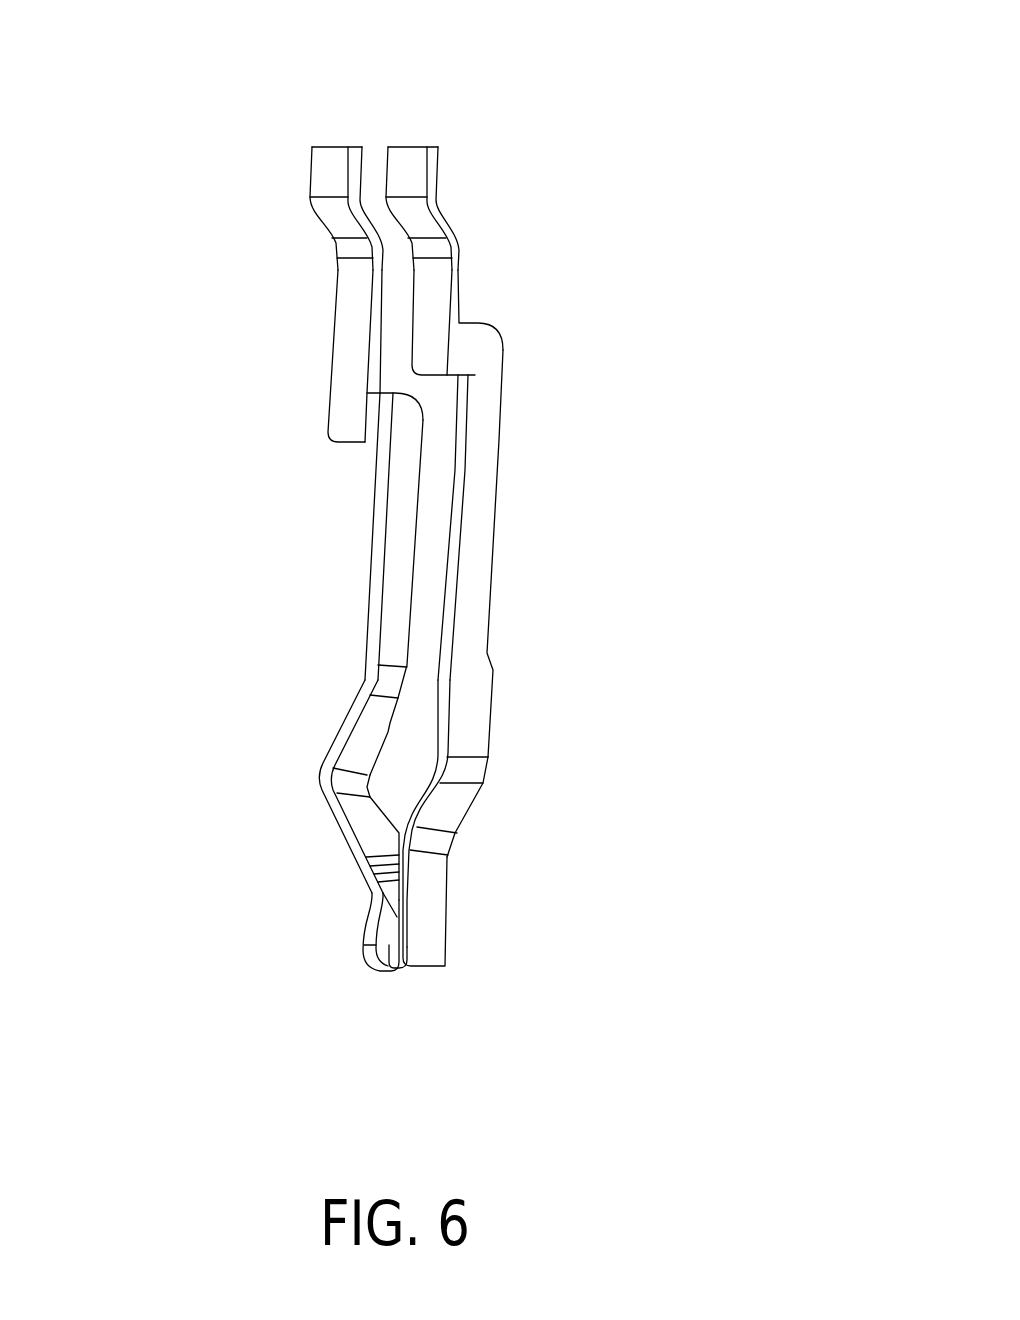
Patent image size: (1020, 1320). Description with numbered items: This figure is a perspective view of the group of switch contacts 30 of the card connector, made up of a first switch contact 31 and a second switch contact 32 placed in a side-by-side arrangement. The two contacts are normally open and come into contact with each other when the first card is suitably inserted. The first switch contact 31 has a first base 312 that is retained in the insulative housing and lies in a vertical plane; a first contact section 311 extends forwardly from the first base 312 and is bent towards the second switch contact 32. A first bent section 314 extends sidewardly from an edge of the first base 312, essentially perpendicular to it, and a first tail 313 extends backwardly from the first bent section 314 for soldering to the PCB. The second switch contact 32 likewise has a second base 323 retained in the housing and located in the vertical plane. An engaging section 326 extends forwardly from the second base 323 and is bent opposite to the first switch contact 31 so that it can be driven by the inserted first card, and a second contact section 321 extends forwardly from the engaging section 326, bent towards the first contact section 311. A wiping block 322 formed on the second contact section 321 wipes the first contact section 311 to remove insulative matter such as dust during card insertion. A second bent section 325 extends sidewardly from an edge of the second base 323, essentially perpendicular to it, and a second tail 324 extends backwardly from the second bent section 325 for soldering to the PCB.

The group of switch contacts 30 is at (305, 83).
The first switch contact 31 is at (408, 172).
The second switch contact 32 is at (332, 173).
The first contact section 311 is at (432, 840).
The first base 312 is at (480, 563).
The first tail 313 is at (415, 183).
The first bent section 314 is at (462, 347).
The second contact section 321 is at (378, 893).
The wiping block 322 is at (377, 912).
The second base 323 is at (397, 550).
The second tail 324 is at (327, 185).
The second bent section 325 is at (367, 427).
The engaging section 326 is at (345, 787).